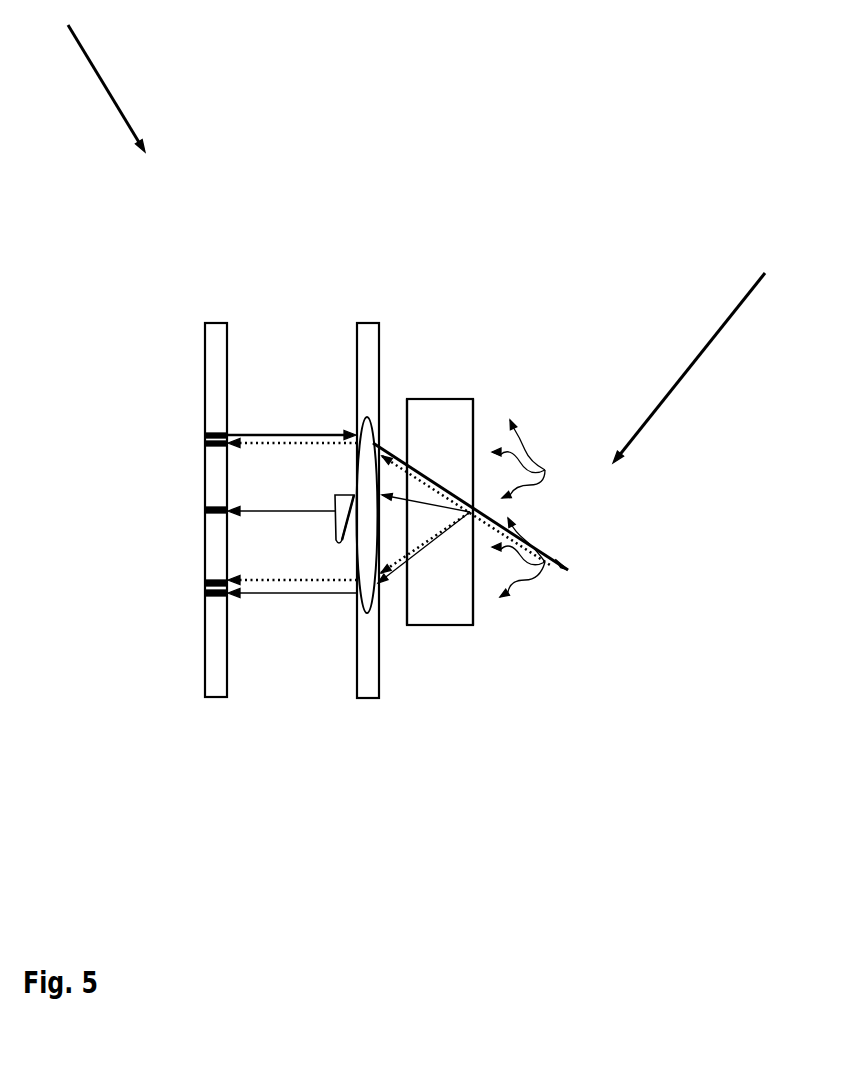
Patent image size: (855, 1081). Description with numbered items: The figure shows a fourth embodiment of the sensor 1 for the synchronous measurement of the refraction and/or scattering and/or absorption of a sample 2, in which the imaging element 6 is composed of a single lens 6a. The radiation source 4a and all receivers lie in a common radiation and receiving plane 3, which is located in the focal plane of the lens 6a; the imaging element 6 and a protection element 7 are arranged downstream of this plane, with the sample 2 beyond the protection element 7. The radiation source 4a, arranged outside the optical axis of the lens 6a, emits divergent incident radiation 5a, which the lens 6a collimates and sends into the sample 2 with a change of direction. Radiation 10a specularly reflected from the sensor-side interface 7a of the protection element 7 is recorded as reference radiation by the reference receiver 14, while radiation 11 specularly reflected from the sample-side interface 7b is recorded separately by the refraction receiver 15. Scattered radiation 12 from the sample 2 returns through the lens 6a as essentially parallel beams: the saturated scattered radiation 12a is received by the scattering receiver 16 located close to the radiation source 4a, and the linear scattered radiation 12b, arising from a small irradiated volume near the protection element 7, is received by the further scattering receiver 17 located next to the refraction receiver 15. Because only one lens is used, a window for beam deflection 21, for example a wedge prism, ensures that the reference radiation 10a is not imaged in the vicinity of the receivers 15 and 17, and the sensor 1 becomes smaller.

The sensor 1 is at (96, 76).
The sample 2 is at (702, 356).
The radiation and receiving plane 3 is at (217, 335).
The radiation source 4a is at (230, 427).
The incident radiation 5a is at (296, 433).
The imaging element 6 is at (368, 323).
The lens 6a is at (367, 420).
The protection element 7 is at (460, 397).
The sensor-side interface 7a is at (401, 595).
The sample-side interface 7b is at (477, 594).
The reference radiation 10a is at (382, 495).
The specularly reflected radiation 11 is at (382, 587).
The scattered radiation 12 is at (518, 560).
The saturated scattered radiation 12a is at (298, 437).
The linear scattered radiation 12b is at (313, 580).
The reference receiver 14 is at (205, 513).
The refraction receiver 15 is at (233, 595).
The scattering receiver 16 is at (205, 446).
The further scattering receiver 17 is at (205, 590).
The window for beam deflection 21 is at (333, 530).